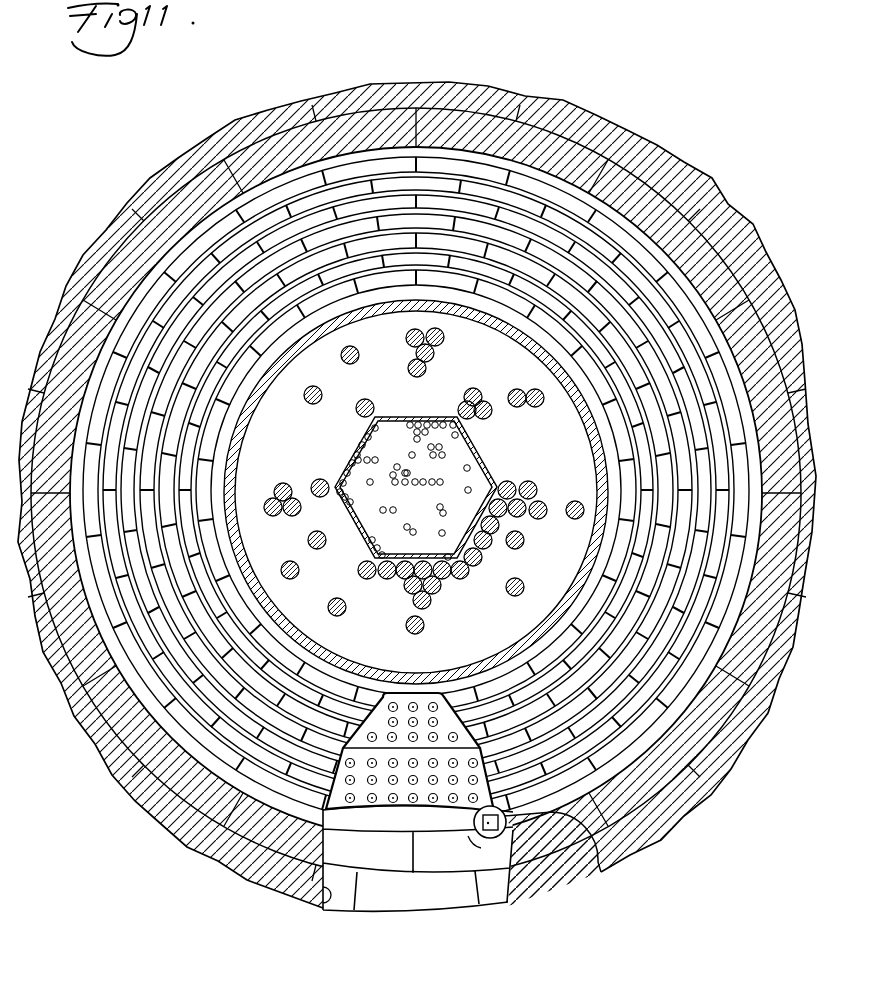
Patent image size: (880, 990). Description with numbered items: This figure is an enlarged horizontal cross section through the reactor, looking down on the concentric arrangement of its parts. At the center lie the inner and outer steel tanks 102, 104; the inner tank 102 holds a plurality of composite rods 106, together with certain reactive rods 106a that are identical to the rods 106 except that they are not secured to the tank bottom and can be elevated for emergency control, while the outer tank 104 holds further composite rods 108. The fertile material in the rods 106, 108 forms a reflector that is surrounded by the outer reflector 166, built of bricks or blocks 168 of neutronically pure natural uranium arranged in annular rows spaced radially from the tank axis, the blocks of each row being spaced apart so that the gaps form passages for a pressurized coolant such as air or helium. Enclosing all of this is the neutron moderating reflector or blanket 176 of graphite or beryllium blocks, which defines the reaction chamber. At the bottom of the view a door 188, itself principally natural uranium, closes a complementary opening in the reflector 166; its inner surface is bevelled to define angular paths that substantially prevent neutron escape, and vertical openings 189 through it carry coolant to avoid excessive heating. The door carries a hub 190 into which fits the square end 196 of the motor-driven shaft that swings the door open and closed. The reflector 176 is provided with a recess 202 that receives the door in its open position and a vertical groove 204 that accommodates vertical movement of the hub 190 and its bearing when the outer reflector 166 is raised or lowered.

The inner steel tank 102 is at (510, 458).
The outer steel tank 104 is at (418, 303).
The composite rods 106 is at (362, 412).
The reactive rods 106a is at (447, 454).
The composite rods 108 is at (485, 376).
The outer reflector 166 is at (173, 803).
The blocks 168 is at (203, 436).
The neutron moderating reflector 176 is at (660, 182).
The door 188 is at (400, 698).
The vertical openings 189 is at (430, 700).
The hub 190 is at (606, 852).
The square end 196 is at (493, 838).
The recess 202 is at (335, 903).
The vertical groove 204 is at (477, 840).